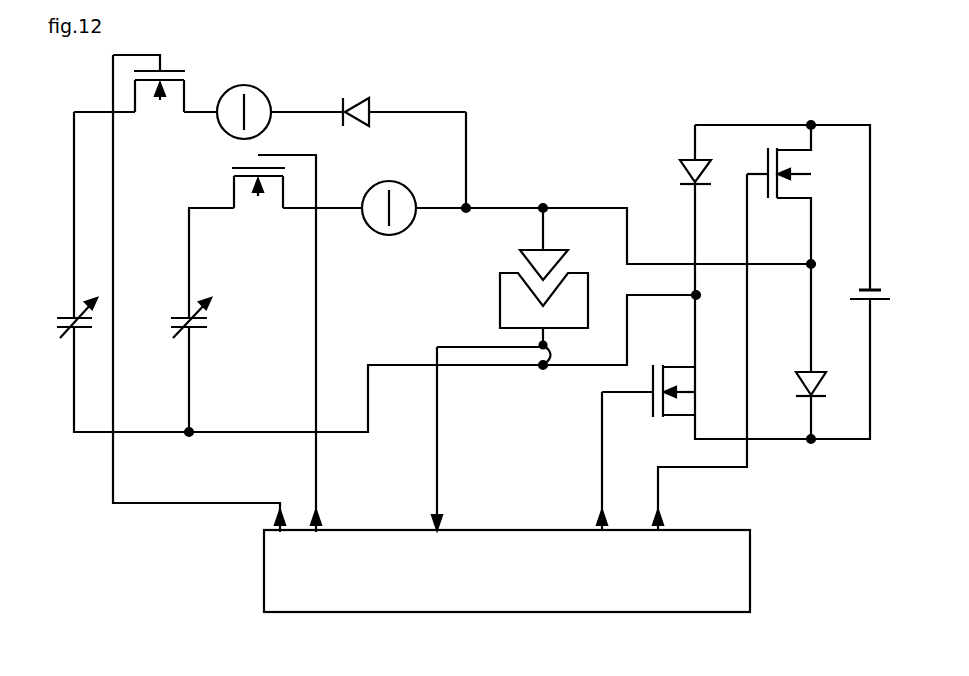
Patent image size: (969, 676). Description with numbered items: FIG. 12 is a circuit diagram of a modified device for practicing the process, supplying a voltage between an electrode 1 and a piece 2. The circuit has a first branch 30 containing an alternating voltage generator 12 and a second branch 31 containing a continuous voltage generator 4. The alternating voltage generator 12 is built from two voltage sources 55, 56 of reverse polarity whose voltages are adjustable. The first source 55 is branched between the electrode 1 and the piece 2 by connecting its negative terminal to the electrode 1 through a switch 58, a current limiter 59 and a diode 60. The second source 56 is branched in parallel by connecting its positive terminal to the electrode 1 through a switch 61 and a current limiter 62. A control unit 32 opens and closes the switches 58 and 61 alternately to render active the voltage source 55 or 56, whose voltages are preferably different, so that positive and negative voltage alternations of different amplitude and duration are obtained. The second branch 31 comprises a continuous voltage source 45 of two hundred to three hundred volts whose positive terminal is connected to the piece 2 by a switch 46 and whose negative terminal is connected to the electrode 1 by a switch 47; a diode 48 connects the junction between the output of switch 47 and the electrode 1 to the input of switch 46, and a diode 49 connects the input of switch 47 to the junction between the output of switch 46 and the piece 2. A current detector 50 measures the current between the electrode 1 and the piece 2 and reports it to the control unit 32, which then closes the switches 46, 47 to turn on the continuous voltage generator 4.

The electrode 1 is at (528, 252).
The piece 2 is at (575, 305).
The continuous voltage generator 4 is at (682, 140).
The alternating voltage generator 12 is at (480, 120).
The first branch 30 is at (418, 100).
The second branch 31 is at (726, 118).
The control unit 32 is at (730, 568).
The continuous voltage source 45 is at (880, 296).
The switch 46 is at (698, 386).
The switch 47 is at (813, 182).
The diode 48 is at (822, 386).
The diode 49 is at (706, 170).
The current detector 50 is at (540, 352).
The first voltage source 55 is at (62, 320).
The second voltage source 56 is at (207, 326).
The switch 58 is at (163, 115).
The current limiter 59 is at (258, 86).
The diode 60 is at (355, 96).
The switch 61 is at (253, 212).
The current limiter 62 is at (403, 182).